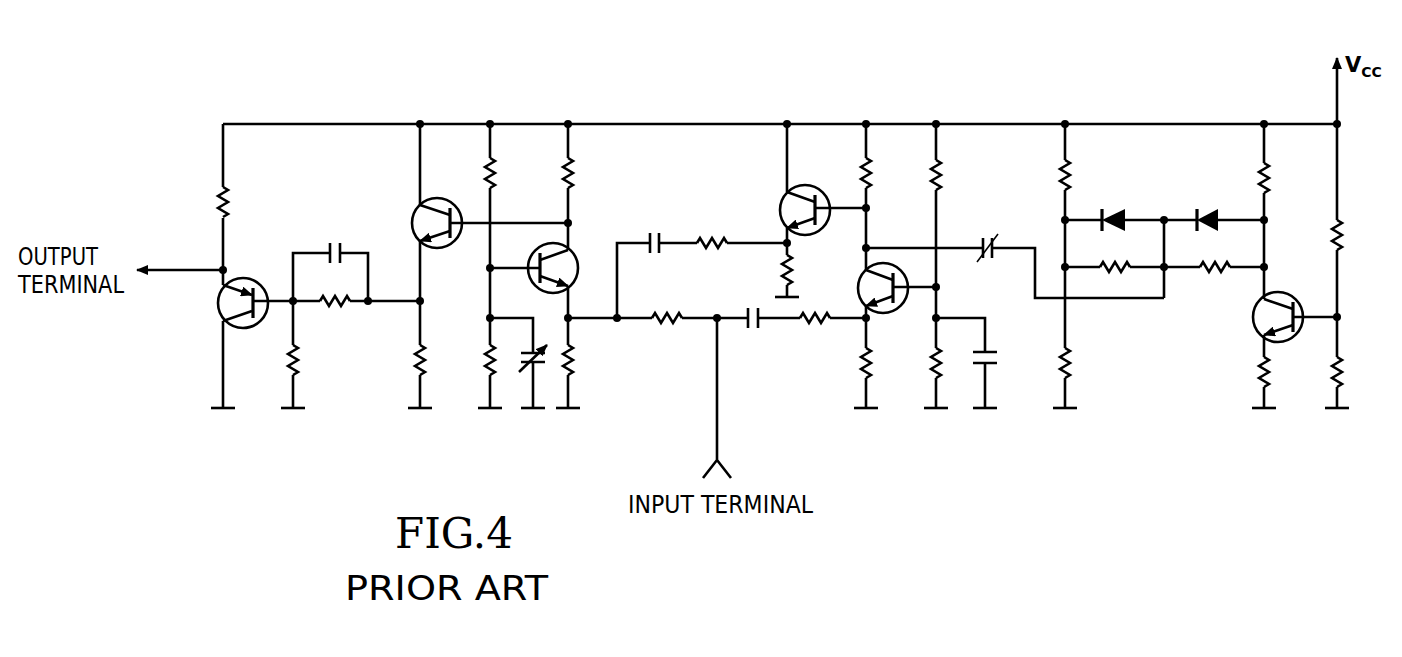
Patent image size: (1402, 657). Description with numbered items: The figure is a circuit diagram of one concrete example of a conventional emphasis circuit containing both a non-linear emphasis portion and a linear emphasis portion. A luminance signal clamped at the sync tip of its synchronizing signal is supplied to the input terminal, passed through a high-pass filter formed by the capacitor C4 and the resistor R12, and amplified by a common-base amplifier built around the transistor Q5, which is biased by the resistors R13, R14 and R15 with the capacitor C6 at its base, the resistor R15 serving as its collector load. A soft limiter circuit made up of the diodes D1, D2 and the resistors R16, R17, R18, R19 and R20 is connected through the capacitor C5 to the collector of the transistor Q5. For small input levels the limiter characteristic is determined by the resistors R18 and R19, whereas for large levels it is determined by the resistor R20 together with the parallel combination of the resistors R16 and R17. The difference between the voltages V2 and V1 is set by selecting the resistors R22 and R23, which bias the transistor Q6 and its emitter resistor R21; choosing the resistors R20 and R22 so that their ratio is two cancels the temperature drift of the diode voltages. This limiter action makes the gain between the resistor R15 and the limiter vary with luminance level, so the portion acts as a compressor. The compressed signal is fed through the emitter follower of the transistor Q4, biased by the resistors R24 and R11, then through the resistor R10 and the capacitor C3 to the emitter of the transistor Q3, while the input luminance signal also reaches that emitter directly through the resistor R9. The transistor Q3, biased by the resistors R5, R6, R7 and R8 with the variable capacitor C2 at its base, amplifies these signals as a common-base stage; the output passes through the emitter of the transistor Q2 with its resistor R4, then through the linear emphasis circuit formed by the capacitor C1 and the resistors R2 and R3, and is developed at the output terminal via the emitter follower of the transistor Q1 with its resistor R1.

The resistor R1 is at (221, 202).
The resistor R2 is at (296, 360).
The resistor R3 is at (332, 306).
The resistor R4 is at (418, 358).
The resistor R5 is at (488, 164).
The resistor R6 is at (488, 352).
The resistor R7 is at (574, 171).
The resistor R8 is at (574, 360).
The resistor R9 is at (668, 328).
The resistor R10 is at (710, 248).
The resistor R11 is at (786, 271).
The resistor R12 is at (816, 326).
The resistor R13 is at (863, 370).
The resistor R14 is at (933, 366).
The resistor R15 is at (934, 176).
The resistor R16 is at (1062, 170).
The resistor R17 is at (1063, 370).
The resistor R18 is at (1114, 264).
The resistor R19 is at (1214, 276).
The resistor R20 is at (1261, 174).
The resistor R21 is at (1261, 376).
The resistor R22 is at (1343, 230).
The resistor R23 is at (1343, 366).
The resistor R24 is at (865, 165).
The capacitor C1 is at (332, 242).
The variable capacitor C2 is at (531, 364).
The capacitor C3 is at (654, 235).
The capacitor C4 is at (758, 330).
The capacitor C5 is at (985, 238).
The capacitor C6 is at (977, 365).
The transistor Q1 is at (219, 310).
The transistor Q2 is at (415, 216).
The transistor Q3 is at (574, 254).
The transistor Q4 is at (783, 201).
The transistor Q5 is at (860, 282).
The transistor Q6 is at (1255, 327).
The diode D1 is at (1118, 211).
The diode D2 is at (1206, 213).
The voltage V1 is at (1064, 220).
The voltage V2 is at (1266, 220).